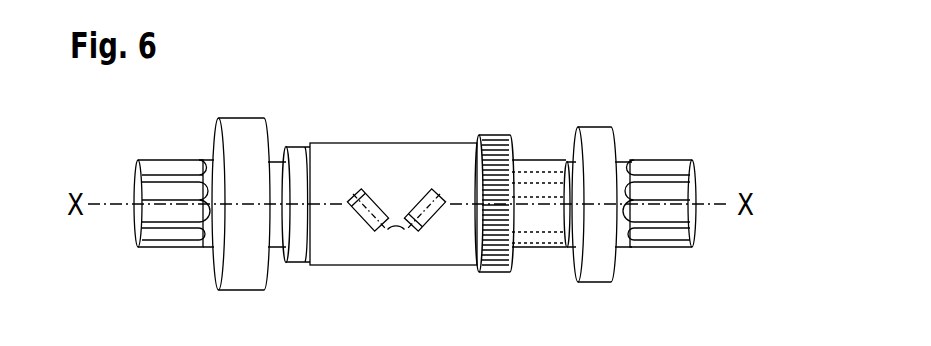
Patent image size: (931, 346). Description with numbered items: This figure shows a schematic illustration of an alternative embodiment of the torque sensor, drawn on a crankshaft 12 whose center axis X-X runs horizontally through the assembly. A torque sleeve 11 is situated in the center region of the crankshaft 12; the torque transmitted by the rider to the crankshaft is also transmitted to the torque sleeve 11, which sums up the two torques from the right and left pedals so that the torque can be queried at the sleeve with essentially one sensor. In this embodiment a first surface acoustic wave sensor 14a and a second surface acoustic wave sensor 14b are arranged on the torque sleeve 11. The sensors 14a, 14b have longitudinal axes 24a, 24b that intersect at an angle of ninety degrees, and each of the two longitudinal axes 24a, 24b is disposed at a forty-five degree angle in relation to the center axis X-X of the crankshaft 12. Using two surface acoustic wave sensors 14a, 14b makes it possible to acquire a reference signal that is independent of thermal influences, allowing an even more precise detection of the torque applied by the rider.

The torque sleeve 11 is at (448, 250).
The crankshaft 12 is at (545, 235).
The first surface acoustic wave sensor 14a is at (364, 190).
The second surface acoustic wave sensor 14b is at (429, 190).
The longitudinal axis 24a is at (353, 196).
The longitudinal axis 24b is at (441, 196).